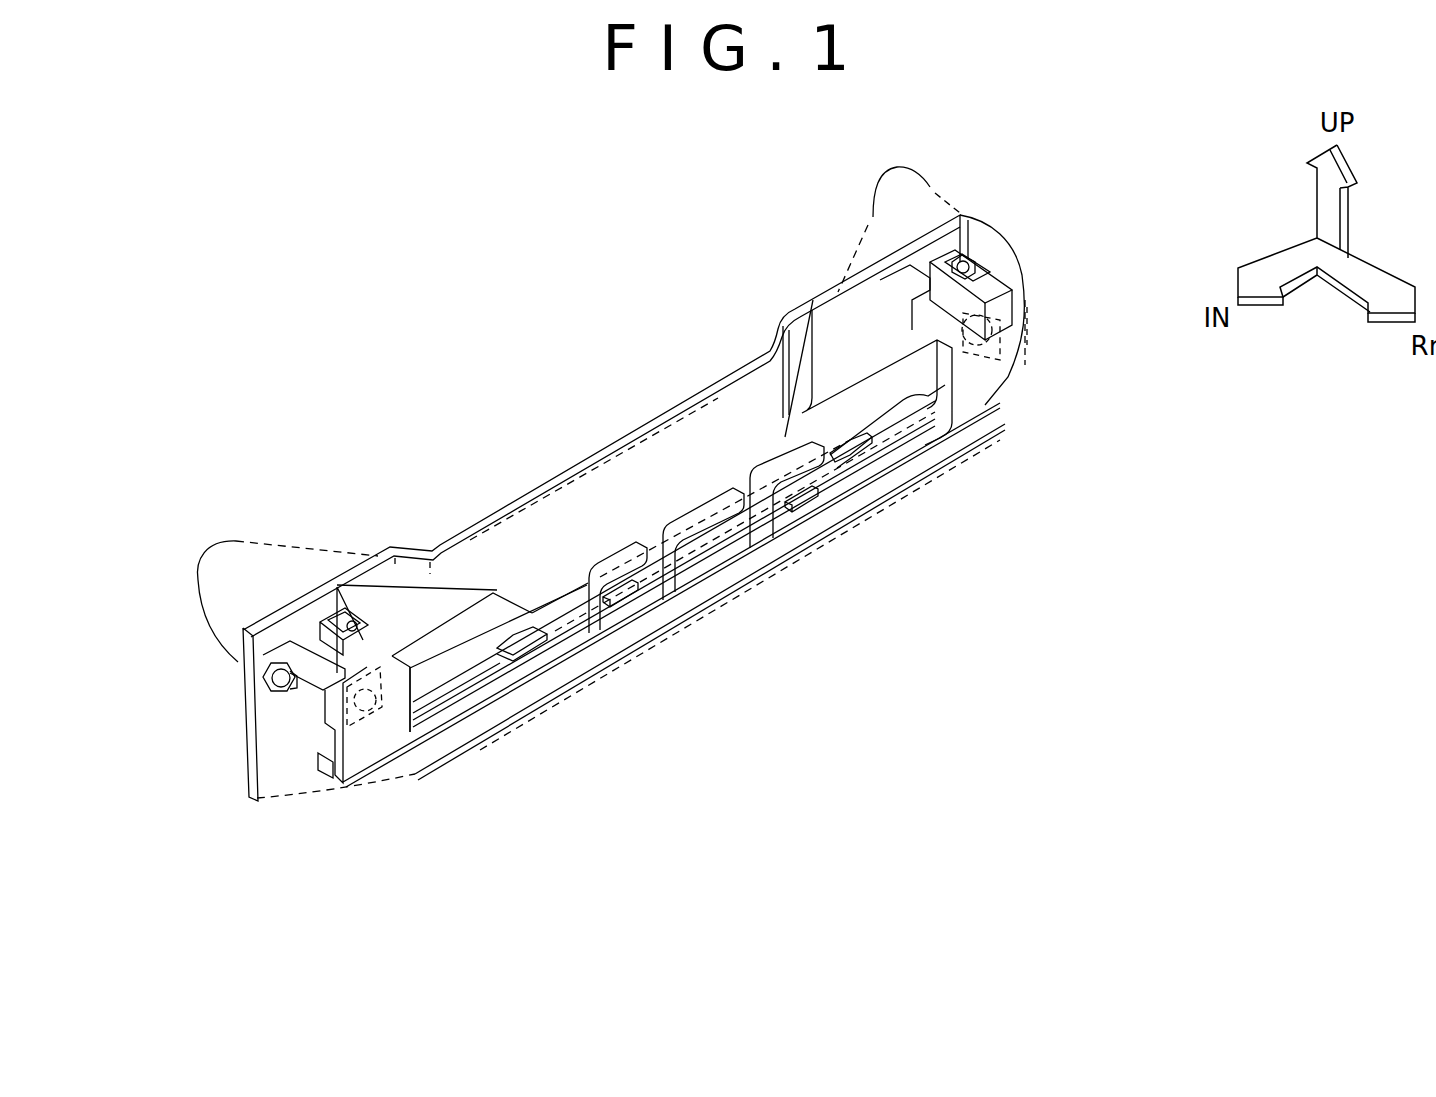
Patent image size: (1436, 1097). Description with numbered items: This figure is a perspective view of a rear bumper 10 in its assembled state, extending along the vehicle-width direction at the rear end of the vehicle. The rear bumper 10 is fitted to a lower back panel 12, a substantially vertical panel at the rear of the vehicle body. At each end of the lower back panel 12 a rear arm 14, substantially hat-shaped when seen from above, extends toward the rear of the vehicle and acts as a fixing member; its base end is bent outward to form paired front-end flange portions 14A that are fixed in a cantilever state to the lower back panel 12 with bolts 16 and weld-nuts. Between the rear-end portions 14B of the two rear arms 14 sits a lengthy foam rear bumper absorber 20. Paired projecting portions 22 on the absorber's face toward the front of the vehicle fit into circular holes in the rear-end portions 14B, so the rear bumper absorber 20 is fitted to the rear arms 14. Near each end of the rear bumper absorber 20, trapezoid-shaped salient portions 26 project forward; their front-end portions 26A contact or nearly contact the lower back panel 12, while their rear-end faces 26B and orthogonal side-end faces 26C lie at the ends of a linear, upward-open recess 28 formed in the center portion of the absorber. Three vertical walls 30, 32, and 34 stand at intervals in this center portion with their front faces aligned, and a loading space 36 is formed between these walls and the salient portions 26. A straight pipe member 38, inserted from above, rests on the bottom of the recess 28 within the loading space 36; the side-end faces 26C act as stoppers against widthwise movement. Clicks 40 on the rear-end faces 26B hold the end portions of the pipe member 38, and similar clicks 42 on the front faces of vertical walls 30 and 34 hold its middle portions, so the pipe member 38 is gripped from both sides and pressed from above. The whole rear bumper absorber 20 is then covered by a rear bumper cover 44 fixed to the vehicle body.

The rear bumper 10 is at (800, 592).
The lower back panel 12 is at (583, 452).
The rear arm 14 is at (279, 640).
The front-end flange portion 14A is at (235, 663).
The rear-end portion 14B is at (365, 730).
The bolt 16 is at (290, 690).
The rear bumper absorber 20 is at (557, 695).
The projecting portion 22 is at (383, 708).
The salient portion 26 is at (405, 590).
The front-end portion 26A is at (337, 587).
The rear-end face 26B is at (440, 697).
The side-end face 26C is at (942, 373).
The recess 28 is at (497, 620).
The vertical wall 30 is at (620, 556).
The vertical wall 32 is at (703, 498).
The vertical wall 34 is at (777, 460).
The loading space 36 is at (567, 647).
The pipe member 38 is at (453, 663).
The click 40 is at (520, 632).
The click 42 is at (627, 603).
The rear bumper cover 44 is at (708, 612).